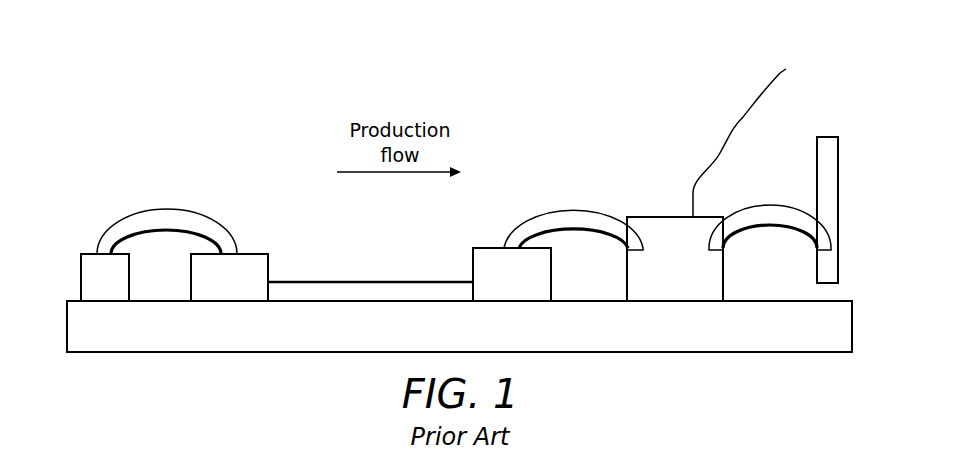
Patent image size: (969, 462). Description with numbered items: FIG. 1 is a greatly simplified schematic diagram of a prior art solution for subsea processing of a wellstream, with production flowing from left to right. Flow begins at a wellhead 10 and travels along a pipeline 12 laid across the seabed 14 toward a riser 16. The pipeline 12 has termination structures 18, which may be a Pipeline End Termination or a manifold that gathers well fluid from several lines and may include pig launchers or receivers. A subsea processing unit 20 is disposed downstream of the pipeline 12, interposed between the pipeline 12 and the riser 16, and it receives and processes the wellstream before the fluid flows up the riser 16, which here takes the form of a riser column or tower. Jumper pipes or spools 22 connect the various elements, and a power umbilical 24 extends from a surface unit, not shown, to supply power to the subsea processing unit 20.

The wellhead 10 is at (93, 287).
The pipeline 12 is at (370, 290).
The seabed 14 is at (448, 338).
The riser 16 is at (828, 143).
The termination structure 18 is at (218, 287).
The subsea processing unit 20 is at (665, 271).
The jumper pipes or spools 22 is at (167, 218).
The power umbilical 24 is at (720, 150).